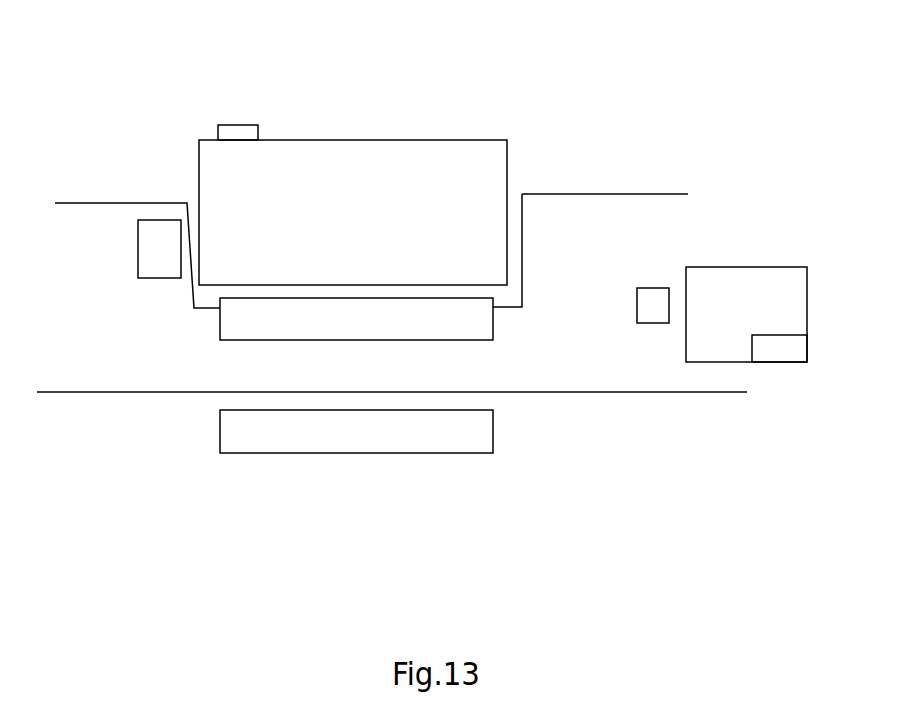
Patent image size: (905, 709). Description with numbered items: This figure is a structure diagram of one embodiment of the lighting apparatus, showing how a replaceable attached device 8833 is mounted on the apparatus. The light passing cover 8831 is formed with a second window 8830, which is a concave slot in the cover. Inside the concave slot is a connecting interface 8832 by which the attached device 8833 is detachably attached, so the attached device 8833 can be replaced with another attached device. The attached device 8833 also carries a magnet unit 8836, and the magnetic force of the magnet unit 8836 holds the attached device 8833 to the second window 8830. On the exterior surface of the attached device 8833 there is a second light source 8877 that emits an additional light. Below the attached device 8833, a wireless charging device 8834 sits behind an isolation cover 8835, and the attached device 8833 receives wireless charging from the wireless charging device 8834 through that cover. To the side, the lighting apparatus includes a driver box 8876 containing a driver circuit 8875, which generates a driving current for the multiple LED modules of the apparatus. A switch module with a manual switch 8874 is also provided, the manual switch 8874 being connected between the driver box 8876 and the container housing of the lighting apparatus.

The second window 8830 is at (522, 245).
The light passing cover 8831 is at (608, 215).
The connecting interface 8832 is at (432, 323).
The attached device 8833 is at (353, 168).
The wireless charging device 8834 is at (468, 435).
The isolation cover 8835 is at (205, 358).
The magnet unit 8836 is at (155, 243).
The manual switch 8874 is at (647, 307).
The driver circuit 8875 is at (770, 348).
The driver box 8876 is at (717, 298).
The second light source 8877 is at (250, 135).